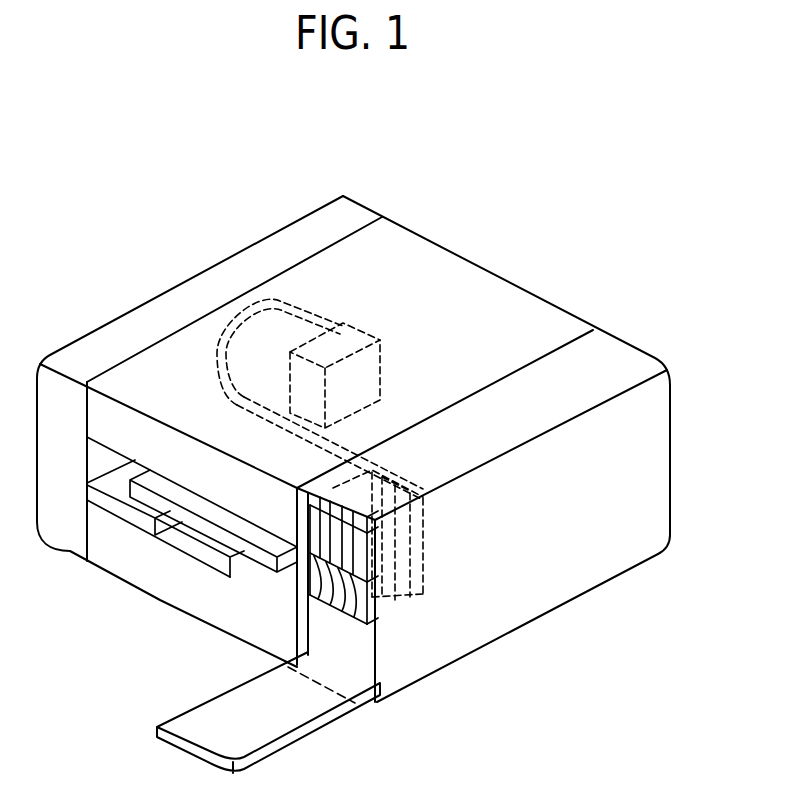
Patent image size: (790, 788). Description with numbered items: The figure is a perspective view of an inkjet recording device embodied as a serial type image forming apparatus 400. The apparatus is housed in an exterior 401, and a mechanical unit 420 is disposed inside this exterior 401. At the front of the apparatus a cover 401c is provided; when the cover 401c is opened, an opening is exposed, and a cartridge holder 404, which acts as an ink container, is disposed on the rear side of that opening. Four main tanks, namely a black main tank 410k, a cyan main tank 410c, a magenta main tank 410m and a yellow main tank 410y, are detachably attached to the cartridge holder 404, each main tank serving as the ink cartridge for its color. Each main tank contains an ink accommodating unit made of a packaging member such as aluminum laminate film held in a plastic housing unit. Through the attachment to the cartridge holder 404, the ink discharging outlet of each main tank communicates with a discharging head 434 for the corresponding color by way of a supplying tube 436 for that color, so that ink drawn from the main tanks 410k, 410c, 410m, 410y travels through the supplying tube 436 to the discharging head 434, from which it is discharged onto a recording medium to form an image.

The image forming apparatus 400 is at (590, 227).
The exterior 401 is at (156, 297).
The cover 401c is at (302, 732).
The cartridge holder 404 is at (425, 558).
The main tank 410k is at (320, 580).
The main tank 410c is at (332, 588).
The main tank 410m is at (340, 598).
The main tank 410y is at (352, 608).
The mechanical unit 420 is at (441, 332).
The discharging head 434 is at (353, 326).
The supplying tube 436 is at (253, 303).